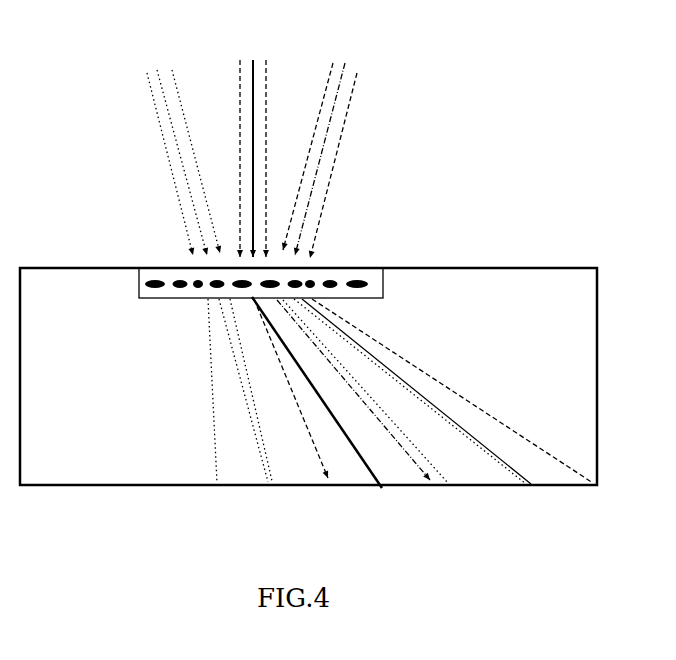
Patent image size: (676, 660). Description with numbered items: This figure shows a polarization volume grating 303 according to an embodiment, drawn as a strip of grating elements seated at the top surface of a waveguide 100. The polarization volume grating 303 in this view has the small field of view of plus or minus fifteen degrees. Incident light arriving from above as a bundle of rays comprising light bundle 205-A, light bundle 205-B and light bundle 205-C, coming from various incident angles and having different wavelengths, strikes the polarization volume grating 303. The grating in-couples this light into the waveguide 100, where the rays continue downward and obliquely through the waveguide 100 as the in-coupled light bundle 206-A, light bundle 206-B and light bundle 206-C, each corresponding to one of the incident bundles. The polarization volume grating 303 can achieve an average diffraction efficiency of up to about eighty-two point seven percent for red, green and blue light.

The waveguide 100 is at (308, 376).
The polarization volume grating 303 is at (261, 295).
The incident light bundle A 205-A is at (255, 151).
The incident light bundle B 205-B is at (329, 154).
The incident light bundle C 205-C is at (179, 150).
The in-coupled light bundle A 206-A is at (341, 392).
The in-coupled light bundle B 206-B is at (438, 391).
The in-coupled light bundle C 206-C is at (240, 391).